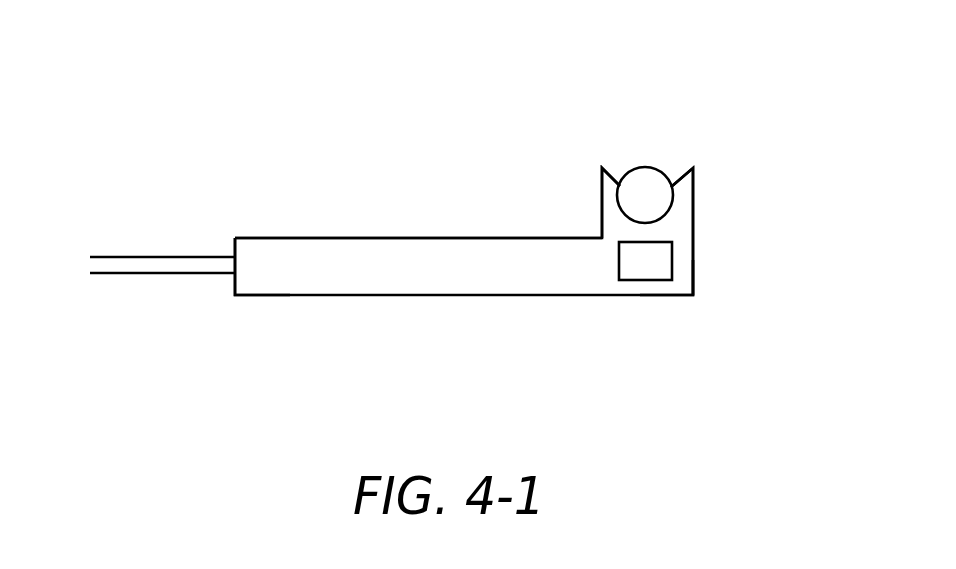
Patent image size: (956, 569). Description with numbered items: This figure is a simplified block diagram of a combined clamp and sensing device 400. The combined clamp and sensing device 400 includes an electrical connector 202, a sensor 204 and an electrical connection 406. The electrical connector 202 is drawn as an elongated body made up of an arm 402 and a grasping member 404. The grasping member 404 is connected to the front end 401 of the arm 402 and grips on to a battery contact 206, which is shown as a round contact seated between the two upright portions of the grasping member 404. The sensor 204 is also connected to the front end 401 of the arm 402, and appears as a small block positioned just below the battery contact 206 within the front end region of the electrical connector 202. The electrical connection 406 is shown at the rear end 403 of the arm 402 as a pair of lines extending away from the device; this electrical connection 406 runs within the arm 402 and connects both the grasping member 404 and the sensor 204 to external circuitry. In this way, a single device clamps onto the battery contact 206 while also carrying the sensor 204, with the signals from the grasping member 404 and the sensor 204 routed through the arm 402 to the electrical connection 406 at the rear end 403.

The combined clamp and sensing device 400 is at (395, 60).
The electrical connector 202 is at (502, 315).
The arm 402 is at (409, 238).
The battery contact 206 is at (645, 180).
The grasping member 404 is at (678, 210).
The sensor 204 is at (657, 265).
The front end 401 is at (688, 290).
The rear end 403 is at (262, 277).
The electrical connection 406 is at (130, 268).